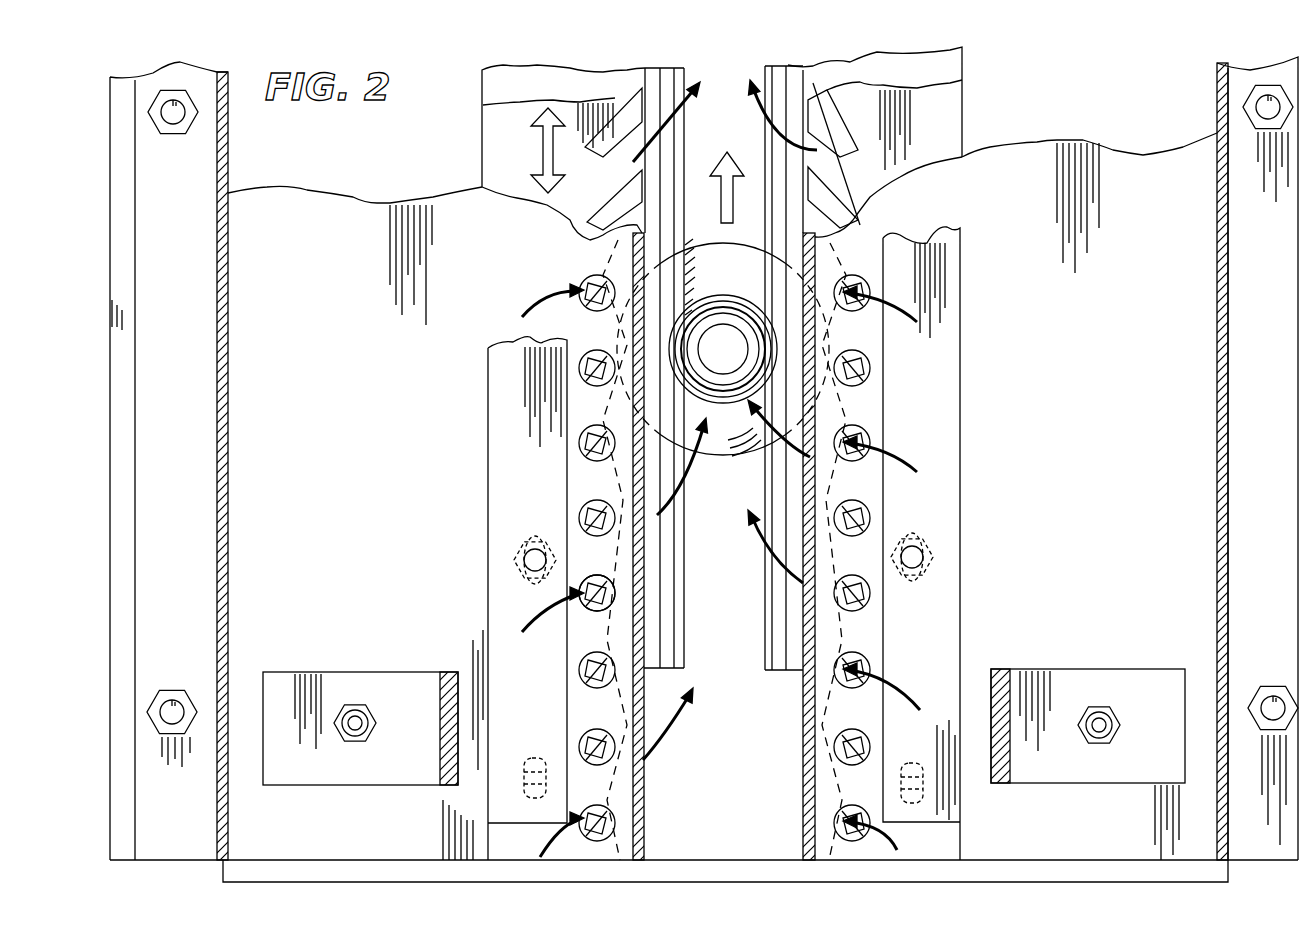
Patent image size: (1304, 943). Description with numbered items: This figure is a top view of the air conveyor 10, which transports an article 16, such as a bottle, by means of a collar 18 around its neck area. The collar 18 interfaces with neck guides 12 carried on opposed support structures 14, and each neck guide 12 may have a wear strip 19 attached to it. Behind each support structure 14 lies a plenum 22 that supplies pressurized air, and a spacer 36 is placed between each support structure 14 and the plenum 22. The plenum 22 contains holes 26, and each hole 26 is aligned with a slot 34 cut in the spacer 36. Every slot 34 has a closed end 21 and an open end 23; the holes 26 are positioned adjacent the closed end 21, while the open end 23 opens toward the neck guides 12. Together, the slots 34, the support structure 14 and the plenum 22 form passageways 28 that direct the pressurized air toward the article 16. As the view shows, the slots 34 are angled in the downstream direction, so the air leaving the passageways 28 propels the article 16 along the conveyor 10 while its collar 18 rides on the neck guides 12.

The air conveyor 10 is at (980, 105).
The neck guide 12 is at (803, 670).
The support structure 14 is at (540, 64).
The article 16 is at (722, 462).
The collar 18 is at (727, 302).
The wear strip 19 is at (670, 70).
The closed end 21 is at (868, 590).
The plenum 22 is at (344, 189).
The open end 23 is at (800, 140).
The hole 26 is at (583, 680).
The passageway 28 is at (557, 638).
The slot 34 is at (590, 600).
The spacer 36 is at (587, 100).